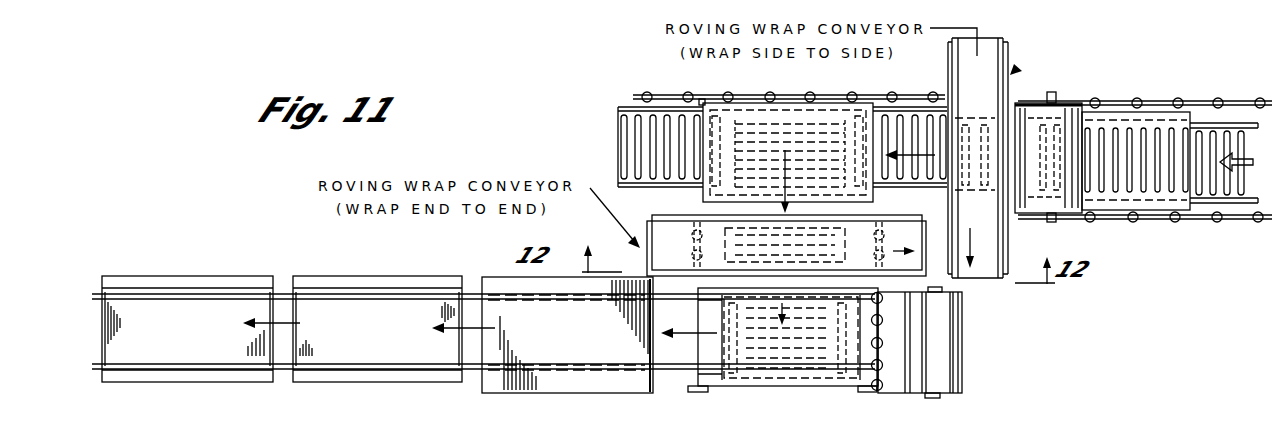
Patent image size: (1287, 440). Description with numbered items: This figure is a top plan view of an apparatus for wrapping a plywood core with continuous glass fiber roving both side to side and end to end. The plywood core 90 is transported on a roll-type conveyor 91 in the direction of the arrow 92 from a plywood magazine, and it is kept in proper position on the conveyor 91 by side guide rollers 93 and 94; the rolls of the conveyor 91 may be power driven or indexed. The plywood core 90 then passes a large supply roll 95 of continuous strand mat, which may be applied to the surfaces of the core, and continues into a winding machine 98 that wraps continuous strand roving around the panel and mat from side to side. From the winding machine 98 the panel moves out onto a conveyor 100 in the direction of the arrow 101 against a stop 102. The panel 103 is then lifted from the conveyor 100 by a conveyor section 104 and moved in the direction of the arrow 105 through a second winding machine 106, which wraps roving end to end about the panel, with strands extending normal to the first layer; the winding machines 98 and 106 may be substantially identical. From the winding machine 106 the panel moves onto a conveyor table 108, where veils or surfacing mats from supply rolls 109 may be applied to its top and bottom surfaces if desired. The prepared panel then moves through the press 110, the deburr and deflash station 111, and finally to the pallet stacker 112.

The plywood core 90 is at (1152, 212).
The roll-type conveyor 91 is at (1240, 170).
The arrow 92 is at (1243, 158).
The side guide roller 93 is at (1177, 101).
The side guide roller 94 is at (1212, 222).
The supply roll 95 is at (1037, 214).
The winding machine 98 is at (1016, 70).
The conveyor 100 is at (938, 186).
The arrow 101 is at (938, 180).
The stop 102 is at (703, 100).
The panel 103 is at (782, 105).
The conveyor section 104 is at (857, 196).
The arrow 105 is at (783, 200).
The winding machine 106 is at (660, 245).
The conveyor table 108 is at (766, 390).
The supply rolls 109 is at (947, 344).
The press 110 is at (575, 393).
The deburr and deflash station 111 is at (380, 383).
The pallet stacker 112 is at (255, 383).